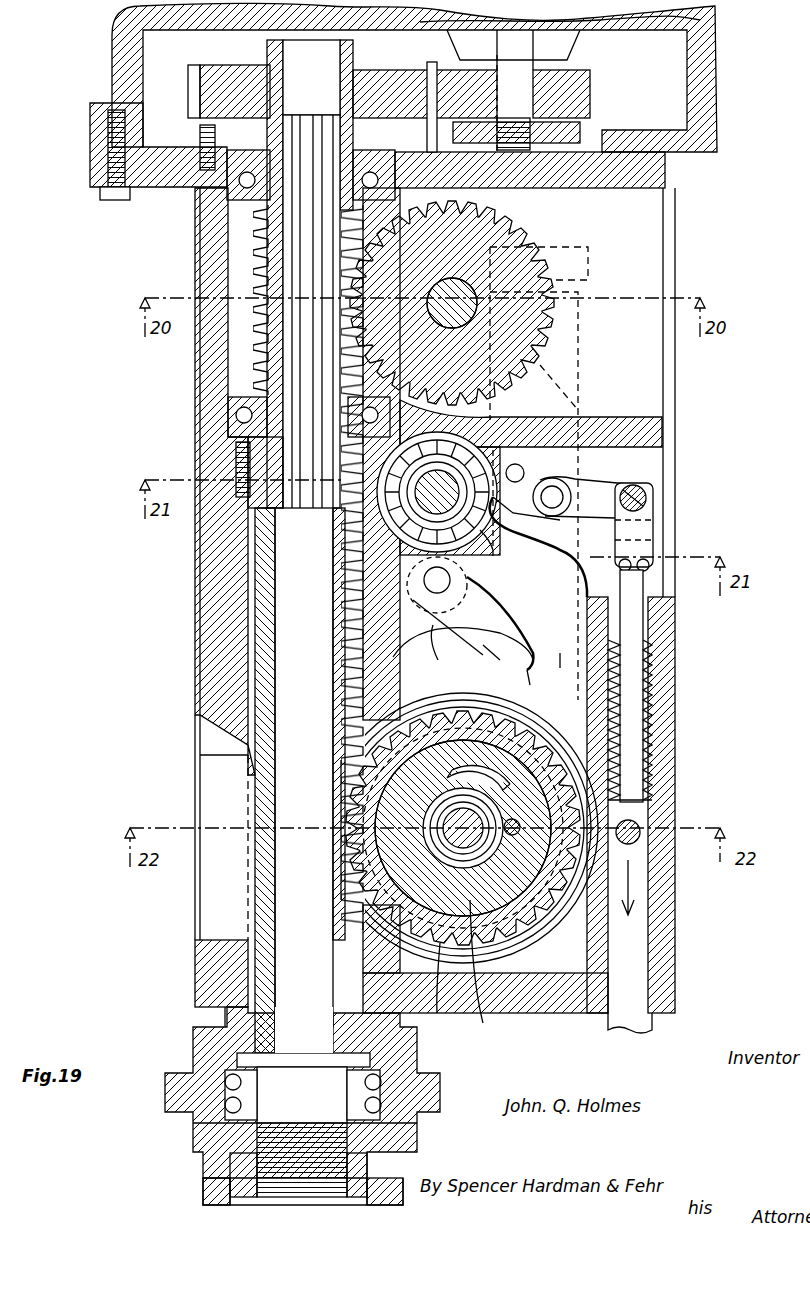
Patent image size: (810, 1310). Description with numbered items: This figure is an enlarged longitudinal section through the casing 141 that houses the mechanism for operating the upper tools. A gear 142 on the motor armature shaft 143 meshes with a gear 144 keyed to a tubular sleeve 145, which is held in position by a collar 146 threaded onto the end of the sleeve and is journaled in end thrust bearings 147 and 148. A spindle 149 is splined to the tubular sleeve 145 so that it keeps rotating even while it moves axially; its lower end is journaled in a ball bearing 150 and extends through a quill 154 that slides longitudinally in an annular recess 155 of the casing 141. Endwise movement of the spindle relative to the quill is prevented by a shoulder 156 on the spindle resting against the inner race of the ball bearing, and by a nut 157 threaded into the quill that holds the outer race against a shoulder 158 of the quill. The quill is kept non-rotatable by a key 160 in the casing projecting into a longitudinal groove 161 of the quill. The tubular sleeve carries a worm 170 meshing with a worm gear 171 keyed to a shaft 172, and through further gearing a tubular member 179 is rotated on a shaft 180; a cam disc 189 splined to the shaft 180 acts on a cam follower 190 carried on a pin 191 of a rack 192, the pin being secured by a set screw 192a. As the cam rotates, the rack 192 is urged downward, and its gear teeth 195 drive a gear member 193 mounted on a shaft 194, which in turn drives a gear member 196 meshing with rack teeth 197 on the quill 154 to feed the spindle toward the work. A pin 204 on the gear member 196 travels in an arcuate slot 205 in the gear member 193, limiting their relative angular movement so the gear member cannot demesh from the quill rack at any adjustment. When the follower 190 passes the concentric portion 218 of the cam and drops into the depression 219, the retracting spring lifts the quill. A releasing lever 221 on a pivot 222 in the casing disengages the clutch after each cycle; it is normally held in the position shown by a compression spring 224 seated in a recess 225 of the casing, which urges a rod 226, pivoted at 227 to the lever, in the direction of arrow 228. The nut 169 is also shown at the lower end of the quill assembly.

The casing 141 is at (225, 553).
The gear 142 is at (580, 92).
The armature shaft 143 is at (513, 72).
The gear 144 is at (394, 85).
The tubular sleeve 145 is at (270, 180).
The collar 146 is at (275, 40).
The end thrust bearing 147 is at (252, 198).
The end thrust bearing 148 is at (236, 416).
The spindle 149 is at (310, 622).
The ball bearing 150 is at (230, 1082).
The quill 154 is at (245, 965).
The annular recess 155 is at (265, 705).
The shoulder 156 is at (225, 1020).
The nut 157 is at (195, 1130).
The shoulder 158 is at (195, 1045).
The key 160 is at (213, 786).
The longitudinal groove 161 is at (245, 757).
The threaded nut 169 is at (230, 1185).
The worm 170 is at (262, 333).
The worm gear 171 is at (470, 245).
The shaft 172 is at (460, 303).
The tubular member 179 is at (480, 420).
The shaft 180 is at (502, 548).
The cam disc 189 is at (545, 624).
The cam follower 190 is at (463, 646).
The pin 191 is at (504, 654).
The rack 192 is at (559, 676).
The pawl pivot 192a is at (460, 577).
The gear member 193 is at (452, 997).
The shaft 194 is at (494, 975).
The gear teeth 195 is at (410, 882).
The gear member 196 is at (340, 806).
The rack teeth 197 is at (340, 758).
The pin 204 is at (522, 915).
The arcuate slot 205 is at (566, 740).
The concentric portion 218 is at (473, 632).
The depression 219 is at (530, 682).
The releasing lever 221 is at (531, 524).
The pivot 222 is at (560, 492).
The compression spring 224 is at (640, 688).
The recess 225 is at (645, 758).
The rod 226 is at (640, 815).
The pivot 227 is at (650, 500).
The arrow 228 is at (630, 882).